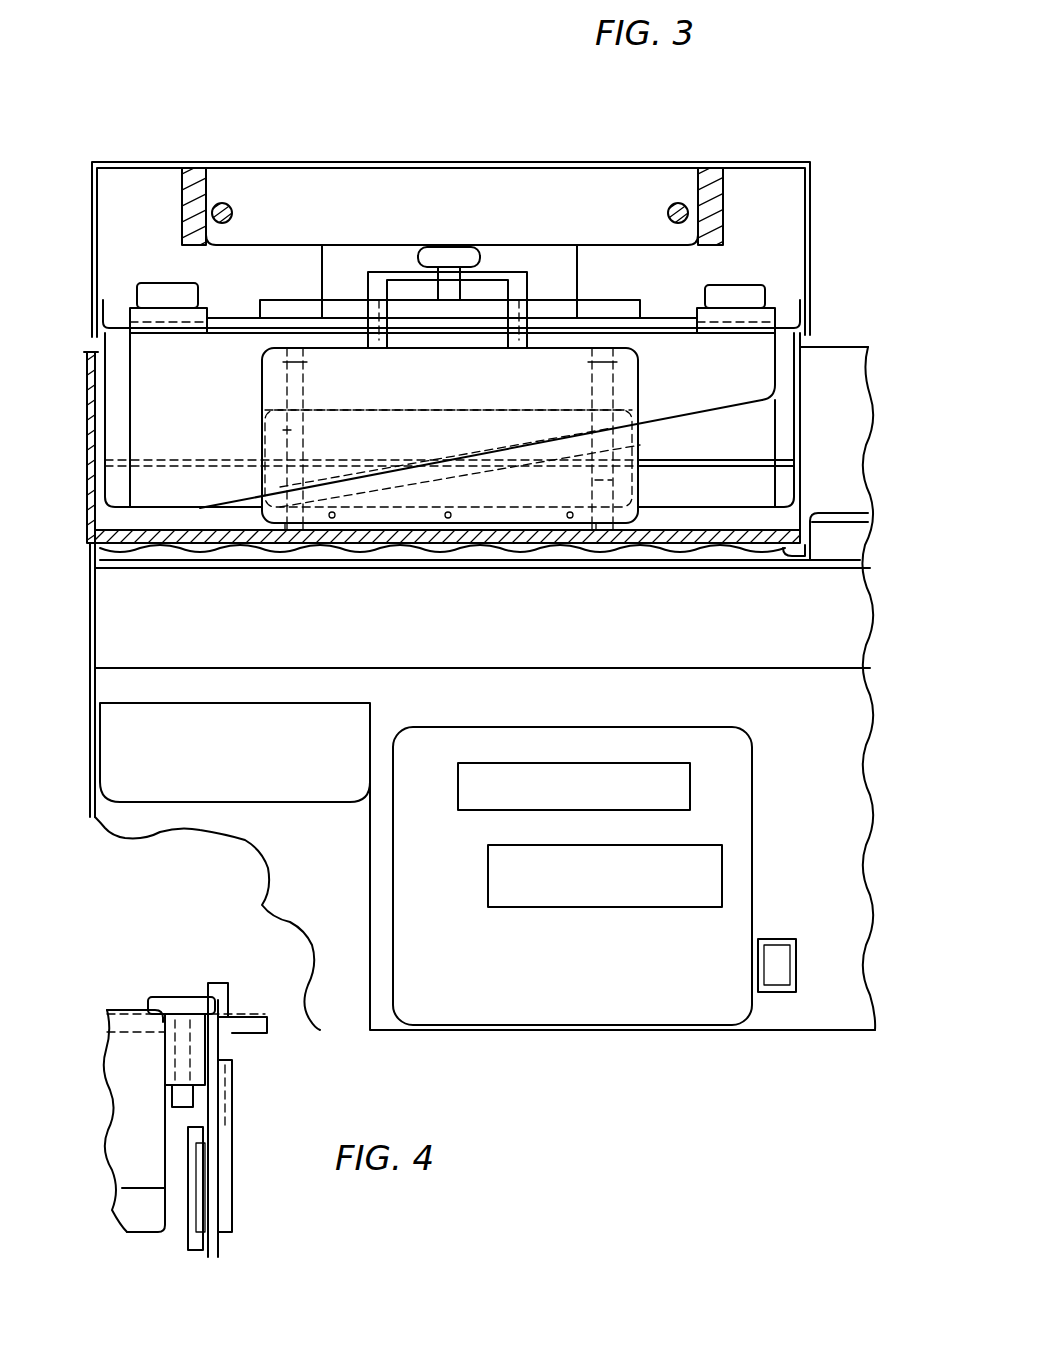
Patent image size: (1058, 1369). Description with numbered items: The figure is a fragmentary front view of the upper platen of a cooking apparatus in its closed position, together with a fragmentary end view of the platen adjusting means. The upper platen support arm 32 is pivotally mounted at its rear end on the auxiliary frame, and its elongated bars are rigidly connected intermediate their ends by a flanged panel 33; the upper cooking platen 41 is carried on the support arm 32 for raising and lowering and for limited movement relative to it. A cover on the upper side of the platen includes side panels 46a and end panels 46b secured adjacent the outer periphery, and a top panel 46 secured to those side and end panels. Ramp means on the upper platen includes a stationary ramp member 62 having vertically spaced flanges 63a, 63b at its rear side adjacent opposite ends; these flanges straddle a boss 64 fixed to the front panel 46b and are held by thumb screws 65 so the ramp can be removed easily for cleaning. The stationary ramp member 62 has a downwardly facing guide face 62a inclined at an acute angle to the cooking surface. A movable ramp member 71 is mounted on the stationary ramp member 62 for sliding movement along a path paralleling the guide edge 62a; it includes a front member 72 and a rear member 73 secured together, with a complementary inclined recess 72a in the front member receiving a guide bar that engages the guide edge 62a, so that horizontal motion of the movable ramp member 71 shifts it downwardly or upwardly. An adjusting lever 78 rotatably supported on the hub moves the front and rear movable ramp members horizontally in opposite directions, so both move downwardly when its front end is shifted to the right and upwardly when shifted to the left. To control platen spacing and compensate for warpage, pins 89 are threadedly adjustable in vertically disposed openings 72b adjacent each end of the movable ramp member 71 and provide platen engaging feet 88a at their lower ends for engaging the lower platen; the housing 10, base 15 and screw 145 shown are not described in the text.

In FIG. 3, the housing 10 is at (92, 660).
In FIG. 3, the base plate 15 is at (782, 530).
In FIG. 3, the upper platen support arm 32 is at (207, 188).
In FIG. 3, the flanged panel 33 is at (623, 243).
In FIG. 3, the upper cooking platen 41 is at (775, 490).
In FIG. 4, the upper cooking platen 41 is at (143, 1207).
In FIG. 3, the top panel 46 is at (680, 318).
In FIG. 3, the side panels 46a is at (798, 390).
In FIG. 4, the side panels 46a is at (142, 1140).
In FIG. 3, the end panels 46b is at (780, 435).
In FIG. 3, the stationary ramp member 62 is at (718, 390).
In FIG. 4, the stationary ramp member 62 is at (212, 1052).
In FIG. 3, the guide face 62a is at (696, 420).
In FIG. 4, the flange 63a is at (160, 1035).
In FIG. 4, the flange 63b is at (168, 1092).
In FIG. 4, the boss 64 is at (205, 1050).
In FIG. 3, the thumb screws 65 is at (745, 293).
In FIG. 3, the movable ramp member 71 is at (650, 484).
In FIG. 4, the movable ramp member 71 is at (240, 1195).
In FIG. 3, the front member 72 is at (622, 387).
In FIG. 3, the recess 72a is at (430, 454).
In FIG. 3, the vertically disposed openings 72b is at (290, 362).
In FIG. 3, the rear member 73 is at (402, 410).
In FIG. 3, the adjusting lever 78 is at (478, 300).
In FIG. 3, the platen engaging feet 88a is at (287, 530).
In FIG. 3, the pins 89 is at (290, 441).
In FIG. 3, the screw 145 is at (235, 212).